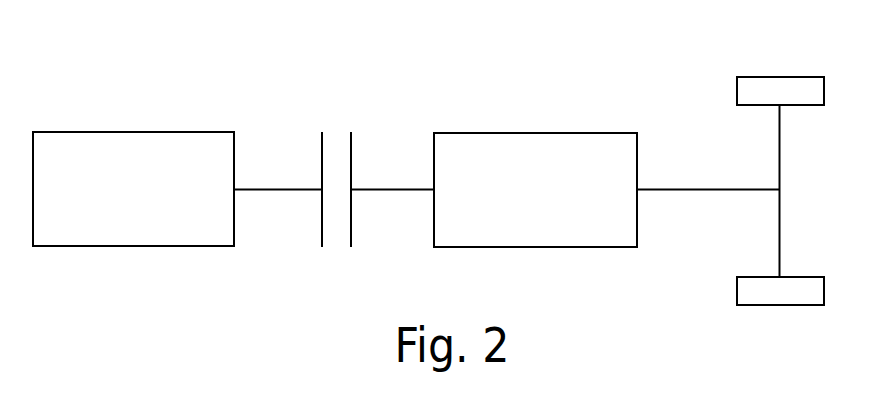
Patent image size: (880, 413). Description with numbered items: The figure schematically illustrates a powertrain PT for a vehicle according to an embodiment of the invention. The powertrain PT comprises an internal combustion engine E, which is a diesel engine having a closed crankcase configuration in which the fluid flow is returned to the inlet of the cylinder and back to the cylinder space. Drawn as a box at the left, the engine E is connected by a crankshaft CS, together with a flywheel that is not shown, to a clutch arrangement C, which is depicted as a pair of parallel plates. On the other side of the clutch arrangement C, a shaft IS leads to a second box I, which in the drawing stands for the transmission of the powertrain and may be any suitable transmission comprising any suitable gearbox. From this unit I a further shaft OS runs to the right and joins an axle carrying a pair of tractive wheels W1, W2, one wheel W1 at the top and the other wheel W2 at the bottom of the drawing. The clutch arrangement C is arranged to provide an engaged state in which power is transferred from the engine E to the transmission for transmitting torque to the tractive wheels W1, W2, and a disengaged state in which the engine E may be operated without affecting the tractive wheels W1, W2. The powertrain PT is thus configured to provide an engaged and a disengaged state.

The powertrain PT is at (166, 66).
The internal combustion engine E is at (133, 189).
The crankshaft CS is at (267, 191).
The clutch arrangement C is at (346, 108).
The input shaft IS is at (382, 191).
The transmission (gearbox) I is at (535, 190).
The output shaft OS is at (695, 191).
The tractive wheel W1 is at (772, 77).
The tractive wheel W2 is at (765, 305).